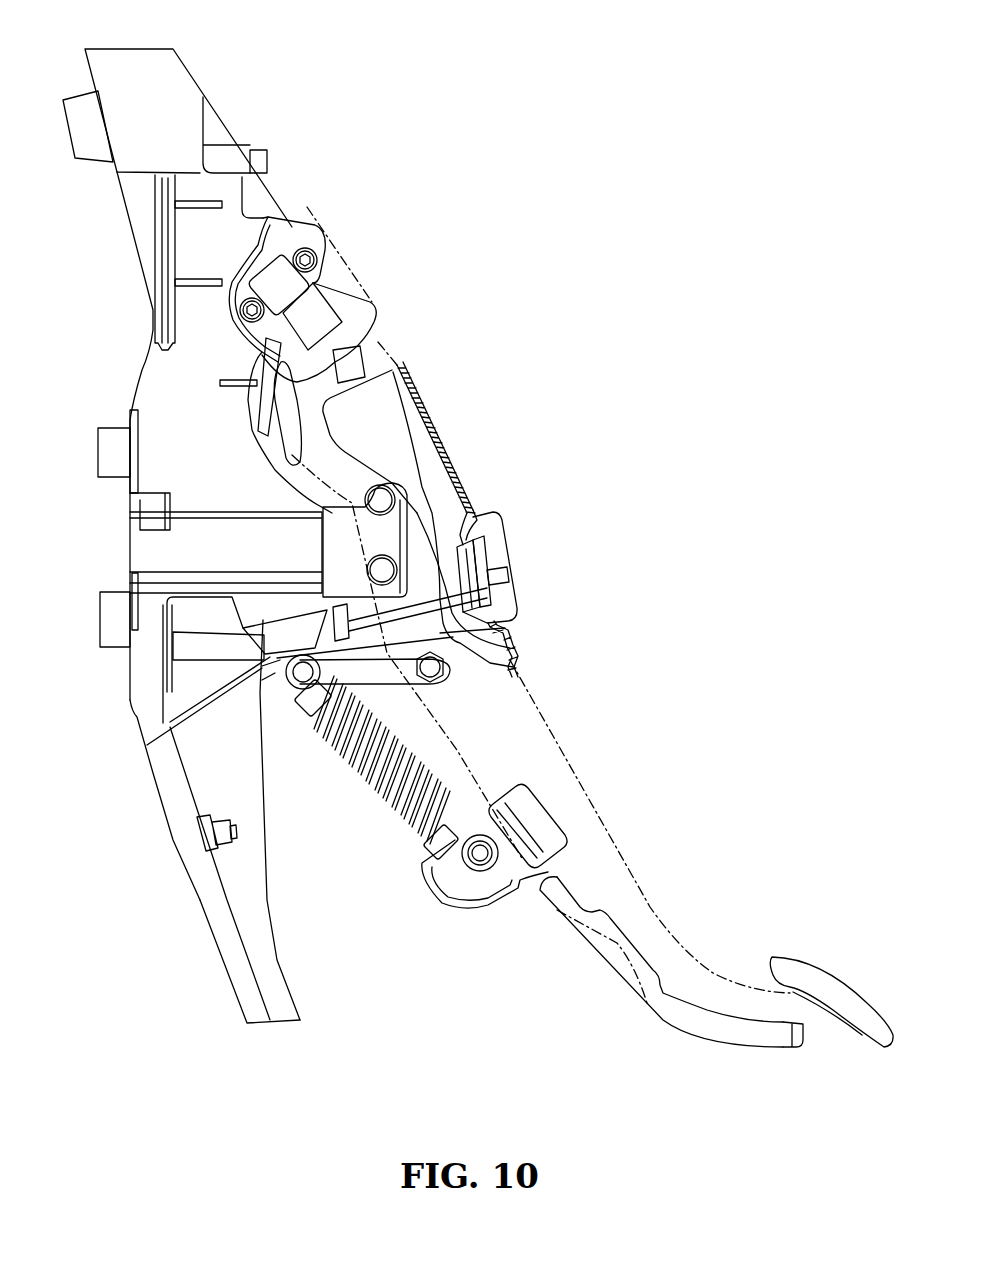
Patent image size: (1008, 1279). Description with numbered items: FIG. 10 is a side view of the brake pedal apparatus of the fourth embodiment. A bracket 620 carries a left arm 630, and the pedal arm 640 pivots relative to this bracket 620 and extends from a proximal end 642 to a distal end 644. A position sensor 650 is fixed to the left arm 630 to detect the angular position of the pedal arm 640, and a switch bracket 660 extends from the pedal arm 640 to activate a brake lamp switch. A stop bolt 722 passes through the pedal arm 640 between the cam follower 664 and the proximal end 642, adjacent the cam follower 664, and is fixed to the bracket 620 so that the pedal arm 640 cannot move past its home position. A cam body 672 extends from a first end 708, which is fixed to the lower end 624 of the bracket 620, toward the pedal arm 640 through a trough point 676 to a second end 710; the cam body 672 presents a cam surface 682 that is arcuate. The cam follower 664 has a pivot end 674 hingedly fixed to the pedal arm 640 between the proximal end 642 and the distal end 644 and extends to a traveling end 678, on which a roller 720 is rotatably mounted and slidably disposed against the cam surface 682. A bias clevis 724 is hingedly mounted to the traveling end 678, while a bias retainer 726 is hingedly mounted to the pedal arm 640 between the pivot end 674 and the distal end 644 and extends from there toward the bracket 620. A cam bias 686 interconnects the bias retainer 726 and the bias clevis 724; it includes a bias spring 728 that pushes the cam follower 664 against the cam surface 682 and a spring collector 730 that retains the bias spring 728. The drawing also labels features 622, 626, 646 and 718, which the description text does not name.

The bracket 620 is at (150, 808).
The clip 622 is at (130, 500).
The lower end 624 is at (245, 1012).
The mounting plate 626 is at (85, 67).
The left arm 630 is at (165, 392).
The pedal arm 640 is at (556, 745).
The proximal end 642 is at (298, 212).
The distal end 644 is at (838, 1038).
The pedal pad 646 is at (833, 990).
The position sensor 650 is at (350, 282).
The switch bracket 660 is at (373, 493).
The cam follower 664 is at (383, 683).
The cam body 672 is at (290, 622).
The pivot end 674 is at (460, 663).
The trough point 676 is at (263, 667).
The traveling end 678 is at (513, 620).
The cam surface 682 is at (190, 708).
The cam bias 686 is at (392, 804).
The first end 708 is at (175, 707).
The second end 710 is at (317, 622).
The arm 718 is at (267, 675).
The roller 720 is at (293, 683).
The stop bolt 722 is at (453, 490).
The bias clevis 724 is at (372, 565).
The bias retainer 726 is at (474, 820).
The bias spring 728 is at (418, 823).
The spring collector 730 is at (350, 760).